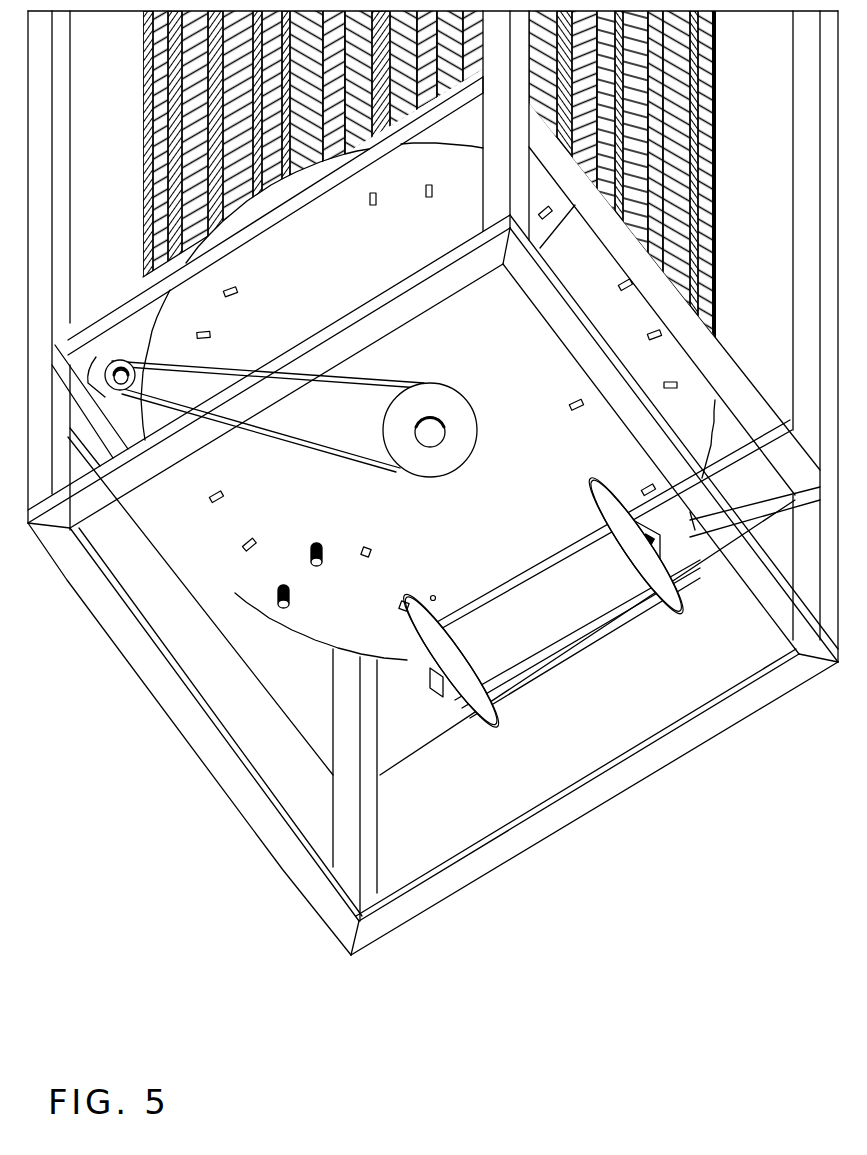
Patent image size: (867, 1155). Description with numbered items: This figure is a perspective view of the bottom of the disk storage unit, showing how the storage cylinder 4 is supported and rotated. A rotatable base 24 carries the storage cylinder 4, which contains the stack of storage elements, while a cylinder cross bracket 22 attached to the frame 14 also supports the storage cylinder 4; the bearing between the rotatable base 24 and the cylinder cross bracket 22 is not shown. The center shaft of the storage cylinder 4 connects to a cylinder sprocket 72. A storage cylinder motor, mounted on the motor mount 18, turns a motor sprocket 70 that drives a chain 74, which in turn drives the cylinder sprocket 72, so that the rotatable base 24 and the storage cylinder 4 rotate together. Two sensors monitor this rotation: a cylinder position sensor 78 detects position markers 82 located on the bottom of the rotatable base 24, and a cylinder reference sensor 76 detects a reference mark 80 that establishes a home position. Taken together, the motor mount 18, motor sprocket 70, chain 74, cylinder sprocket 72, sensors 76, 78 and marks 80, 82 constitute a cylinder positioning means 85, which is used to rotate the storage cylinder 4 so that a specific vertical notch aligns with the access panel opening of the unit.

The storage cylinder 4 is at (722, 265).
The frame 14 is at (208, 752).
The motor mount 18 is at (138, 425).
The cylinder cross bracket 22 is at (497, 378).
The rotatable base 24 is at (328, 294).
The motor sprocket 70 is at (112, 362).
The cylinder sprocket 72 is at (458, 436).
The chain 74 is at (267, 432).
The cylinder reference sensor 76 is at (322, 547).
The cylinder position sensor 78 is at (290, 606).
The reference mark 80 is at (372, 551).
The position markers 82 is at (402, 602).
The cylinder positioning means 85 is at (474, 468).